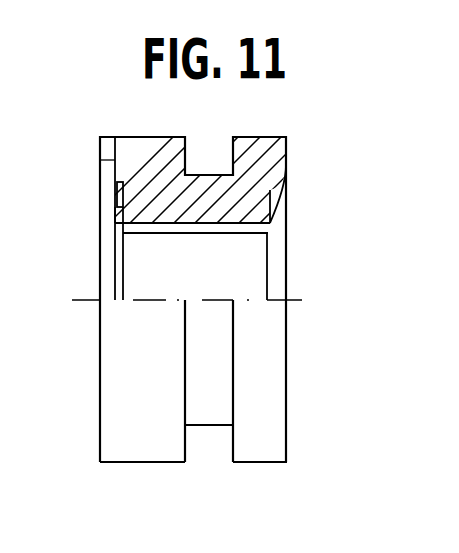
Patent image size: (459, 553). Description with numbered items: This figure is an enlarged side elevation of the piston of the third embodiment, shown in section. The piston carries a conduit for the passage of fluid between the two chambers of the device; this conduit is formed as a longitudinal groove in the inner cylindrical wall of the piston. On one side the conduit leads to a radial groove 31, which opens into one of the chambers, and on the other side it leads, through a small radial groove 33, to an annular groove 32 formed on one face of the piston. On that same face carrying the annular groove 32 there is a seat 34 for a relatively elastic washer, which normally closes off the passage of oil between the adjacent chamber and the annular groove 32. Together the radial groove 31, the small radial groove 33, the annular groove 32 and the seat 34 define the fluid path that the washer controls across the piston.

The radial groove 31 is at (278, 185).
The annular groove 32 is at (120, 190).
The small radial groove 33 is at (117, 209).
The seat 34 is at (110, 160).